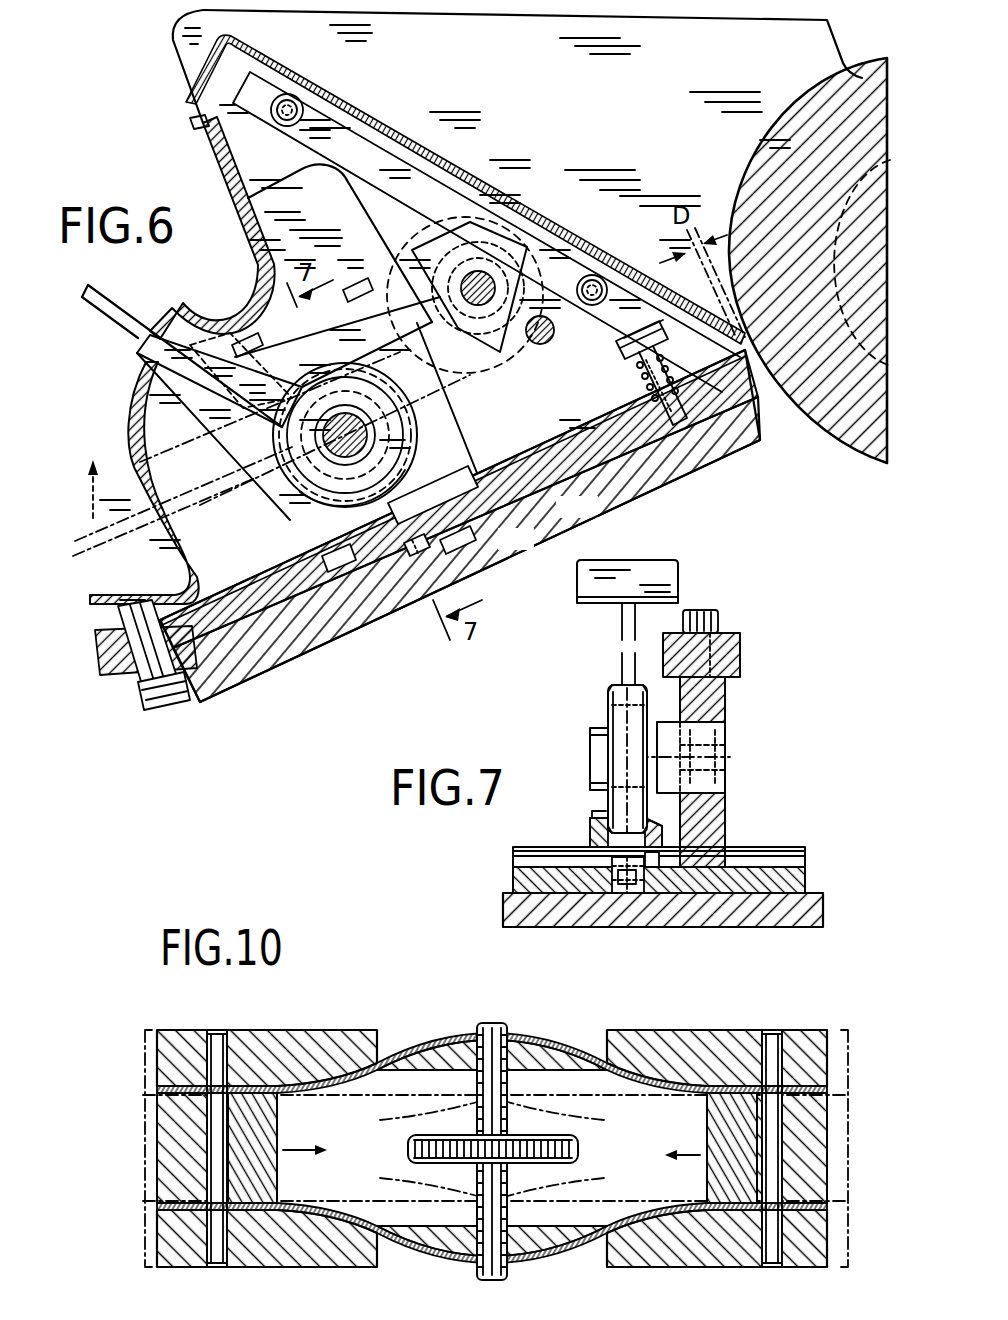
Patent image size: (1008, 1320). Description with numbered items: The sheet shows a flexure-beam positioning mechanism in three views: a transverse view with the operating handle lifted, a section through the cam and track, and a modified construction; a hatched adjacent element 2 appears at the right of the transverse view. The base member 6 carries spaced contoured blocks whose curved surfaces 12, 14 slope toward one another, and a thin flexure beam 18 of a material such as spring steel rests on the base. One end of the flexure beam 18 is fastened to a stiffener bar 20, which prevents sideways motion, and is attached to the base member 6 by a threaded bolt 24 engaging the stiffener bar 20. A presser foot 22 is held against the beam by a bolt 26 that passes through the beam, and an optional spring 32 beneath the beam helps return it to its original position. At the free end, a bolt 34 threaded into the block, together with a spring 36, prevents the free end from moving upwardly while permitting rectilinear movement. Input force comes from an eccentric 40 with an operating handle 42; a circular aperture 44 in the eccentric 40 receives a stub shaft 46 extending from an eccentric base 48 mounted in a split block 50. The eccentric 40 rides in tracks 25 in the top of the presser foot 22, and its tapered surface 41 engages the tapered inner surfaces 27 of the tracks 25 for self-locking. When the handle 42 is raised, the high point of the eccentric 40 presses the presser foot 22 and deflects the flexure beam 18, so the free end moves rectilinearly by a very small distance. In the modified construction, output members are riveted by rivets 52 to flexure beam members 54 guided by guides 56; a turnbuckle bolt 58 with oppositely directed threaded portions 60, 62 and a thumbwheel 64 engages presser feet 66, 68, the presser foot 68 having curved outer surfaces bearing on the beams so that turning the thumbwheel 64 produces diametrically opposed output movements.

In FIG. 6, the glass pane 2 is at (792, 138).
In FIG. 6, the base member 6 is at (308, 622).
In FIG. 6, the curved surface 12 is at (257, 592).
In FIG. 7, the curved surface 12 is at (788, 853).
In FIG. 6, the curved surface 14 is at (466, 549).
In FIG. 6, the flexure beam 18 is at (560, 443).
In FIG. 7, the flexure beam 18 is at (598, 873).
In FIG. 6, the stiffener bar 20 is at (124, 686).
In FIG. 6, the presser foot 22 is at (337, 560).
In FIG. 7, the presser foot 22 is at (657, 868).
In FIG. 6, the threaded bolt 24 is at (172, 706).
In FIG. 6, the tracks 25 is at (461, 510).
In FIG. 7, the tracks 25 is at (663, 832).
In FIG. 6, the bolt 26 is at (418, 548).
In FIG. 7, the bolt 26 is at (626, 882).
In FIG. 7, the inner surface 27 is at (640, 827).
In FIG. 6, the spring 32 is at (470, 562).
In FIG. 7, the spring 32 is at (640, 892).
In FIG. 6, the bolt 34 is at (620, 346).
In FIG. 6, the spring 36 is at (640, 373).
In FIG. 6, the eccentric 40 is at (318, 482).
In FIG. 7, the eccentric 40 is at (618, 700).
In FIG. 6, the tapered surface 41 is at (300, 470).
In FIG. 7, the tapered surface 41 is at (607, 712).
In FIG. 6, the operating handle 42 is at (107, 306).
In FIG. 7, the operating handle 42 is at (668, 575).
In FIG. 6, the circular aperture 44 is at (362, 412).
In FIG. 6, the stub shaft 46 is at (358, 433).
In FIG. 7, the stub shaft 46 is at (600, 752).
In FIG. 6, the eccentric base 48 is at (380, 408).
In FIG. 7, the eccentric base 48 is at (728, 768).
In FIG. 6, the split block 50 is at (263, 427).
In FIG. 7, the split block 50 is at (722, 714).
In FIG. 10, the split block 50 is at (265, 1122).
In FIG. 10, the rivets 52 is at (217, 1045).
In FIG. 10, the flexure beam members 54 is at (437, 1258).
In FIG. 10, the guides 56 is at (300, 1043).
In FIG. 10, the turnbuckle bolt 58 is at (492, 1030).
In FIG. 10, the threaded portion 60 is at (513, 1053).
In FIG. 10, the threaded portion 62 is at (537, 1258).
In FIG. 10, the thumbwheel 64 is at (582, 1153).
In FIG. 10, the presser foot 66 is at (440, 1057).
In FIG. 10, the presser foot 68 is at (417, 1233).